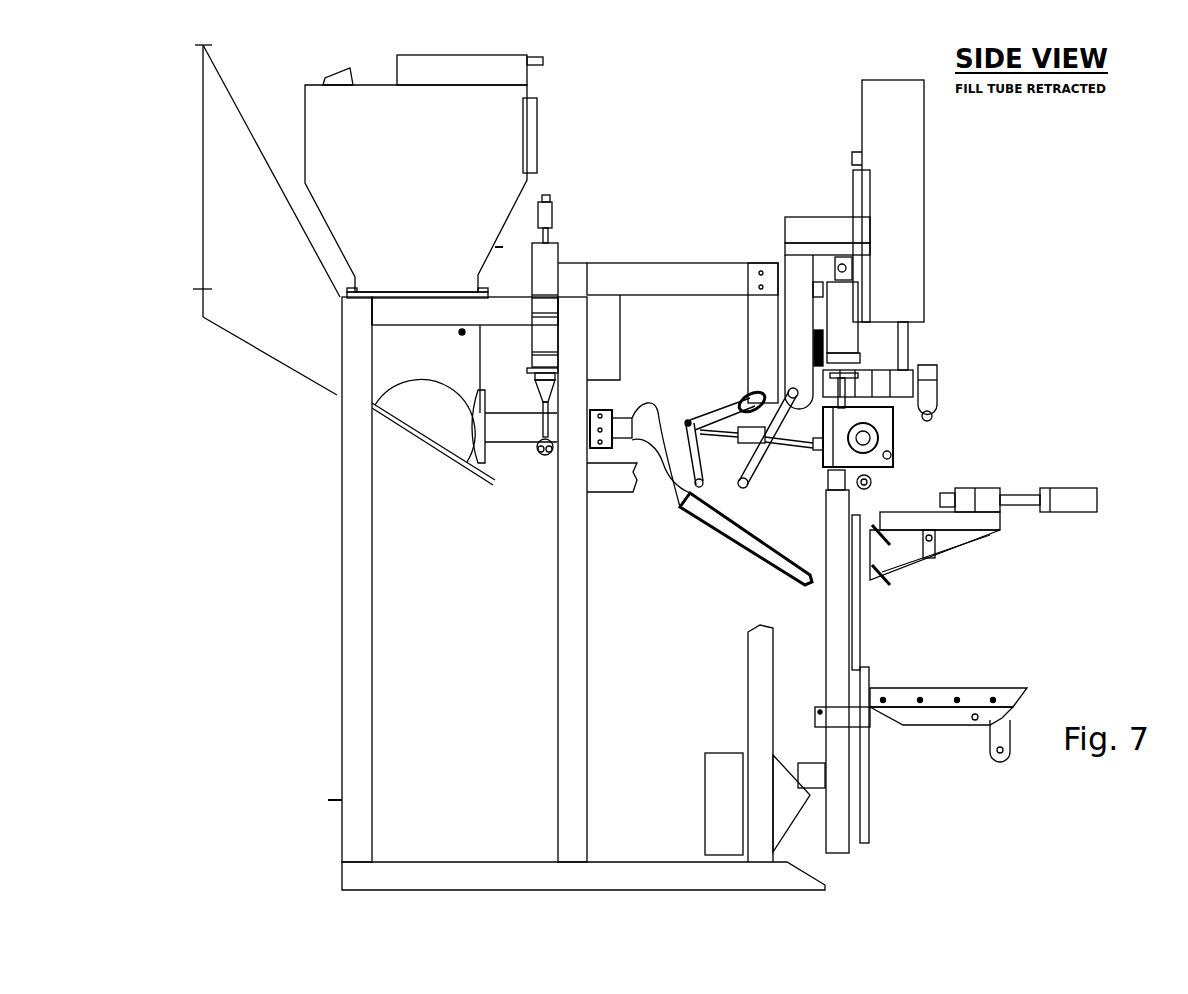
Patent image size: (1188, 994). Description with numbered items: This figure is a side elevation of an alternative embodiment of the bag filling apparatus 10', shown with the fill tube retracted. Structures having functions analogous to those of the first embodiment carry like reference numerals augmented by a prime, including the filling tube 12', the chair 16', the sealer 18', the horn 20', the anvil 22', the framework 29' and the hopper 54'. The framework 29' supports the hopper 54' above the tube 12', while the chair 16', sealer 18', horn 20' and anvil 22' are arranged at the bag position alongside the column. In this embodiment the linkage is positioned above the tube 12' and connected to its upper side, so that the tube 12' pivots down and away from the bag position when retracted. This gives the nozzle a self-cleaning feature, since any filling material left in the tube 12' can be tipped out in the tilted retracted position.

The apparatus 10' is at (451, 220).
The tube 12' is at (727, 497).
The chair 16' is at (921, 740).
The sealer 18' is at (927, 201).
The horn 20' is at (900, 371).
The anvil 22' is at (879, 630).
The framework 29' is at (599, 547).
The hopper 54' is at (431, 255).